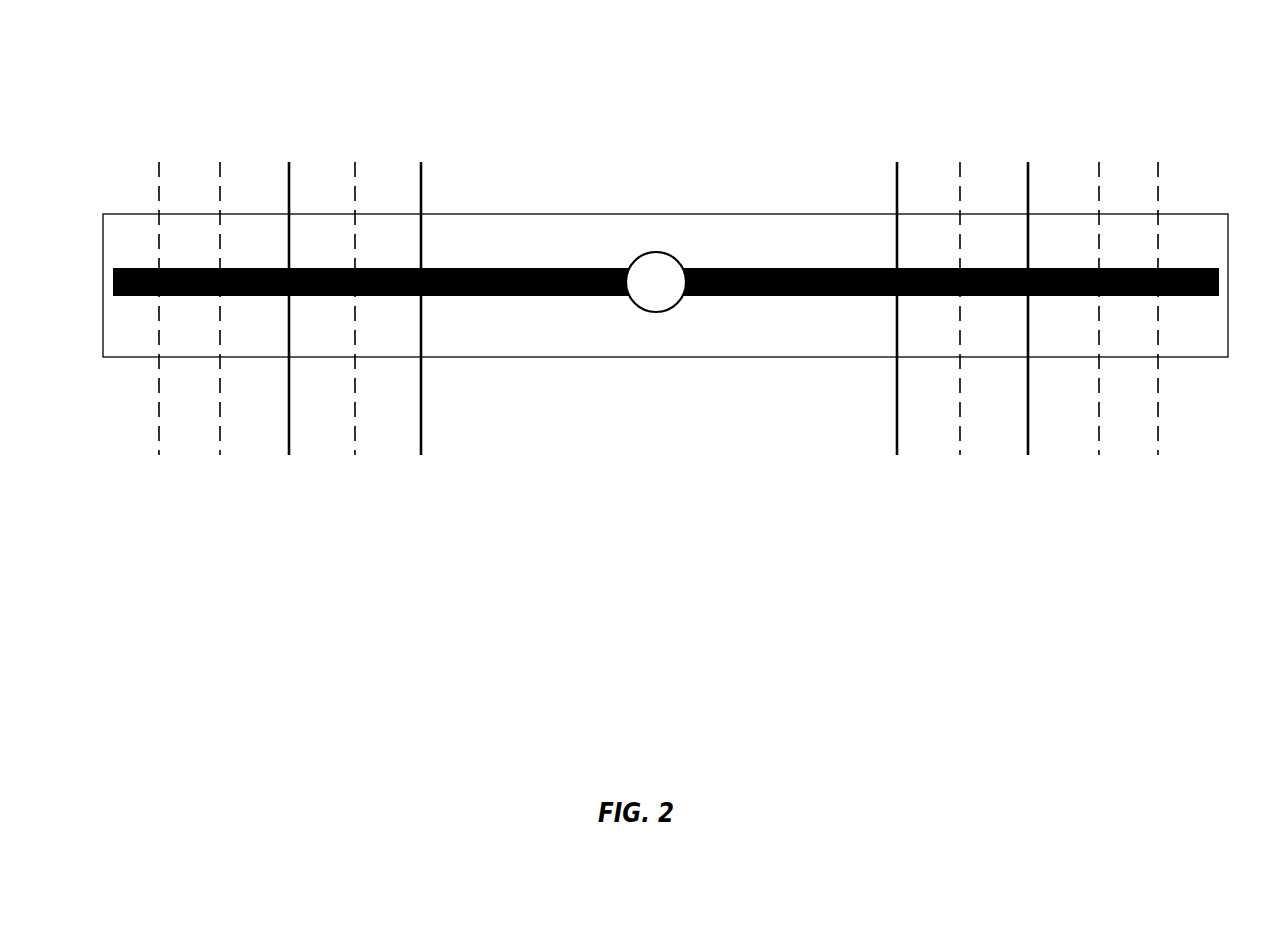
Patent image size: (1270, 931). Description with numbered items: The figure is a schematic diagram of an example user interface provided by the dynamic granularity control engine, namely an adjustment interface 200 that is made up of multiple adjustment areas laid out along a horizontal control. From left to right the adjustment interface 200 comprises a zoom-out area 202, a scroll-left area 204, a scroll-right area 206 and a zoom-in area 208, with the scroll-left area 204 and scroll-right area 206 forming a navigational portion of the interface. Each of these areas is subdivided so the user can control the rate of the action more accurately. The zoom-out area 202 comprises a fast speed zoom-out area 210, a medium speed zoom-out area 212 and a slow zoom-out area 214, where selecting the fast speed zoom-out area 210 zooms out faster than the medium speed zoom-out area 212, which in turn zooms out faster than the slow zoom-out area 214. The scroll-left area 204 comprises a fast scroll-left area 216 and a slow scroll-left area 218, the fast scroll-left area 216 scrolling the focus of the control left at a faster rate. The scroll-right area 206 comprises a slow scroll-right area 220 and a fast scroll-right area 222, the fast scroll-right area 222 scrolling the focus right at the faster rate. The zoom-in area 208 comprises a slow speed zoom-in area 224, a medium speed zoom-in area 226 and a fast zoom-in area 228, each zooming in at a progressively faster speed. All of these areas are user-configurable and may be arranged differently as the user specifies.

The adjustment interface 200 is at (662, 373).
The zoom-out area 202 is at (198, 307).
The scroll-left area 204 is at (366, 308).
The scroll-right area 206 is at (961, 307).
The zoom-in area 208 is at (1129, 307).
The fast speed zoom-out area 210 is at (157, 497).
The medium speed zoom-out area 212 is at (222, 497).
The slow zoom-out area 214 is at (290, 497).
The fast scroll-left area 216 is at (360, 497).
The slow scroll-left area 218 is at (425, 497).
The slow scroll-right area 220 is at (895, 497).
The fast scroll-right area 222 is at (960, 497).
The slow speed zoom-in area 224 is at (1098, 497).
The medium speed zoom-in area 226 is at (1163, 497).
The fast zoom-in area 228 is at (1229, 497).